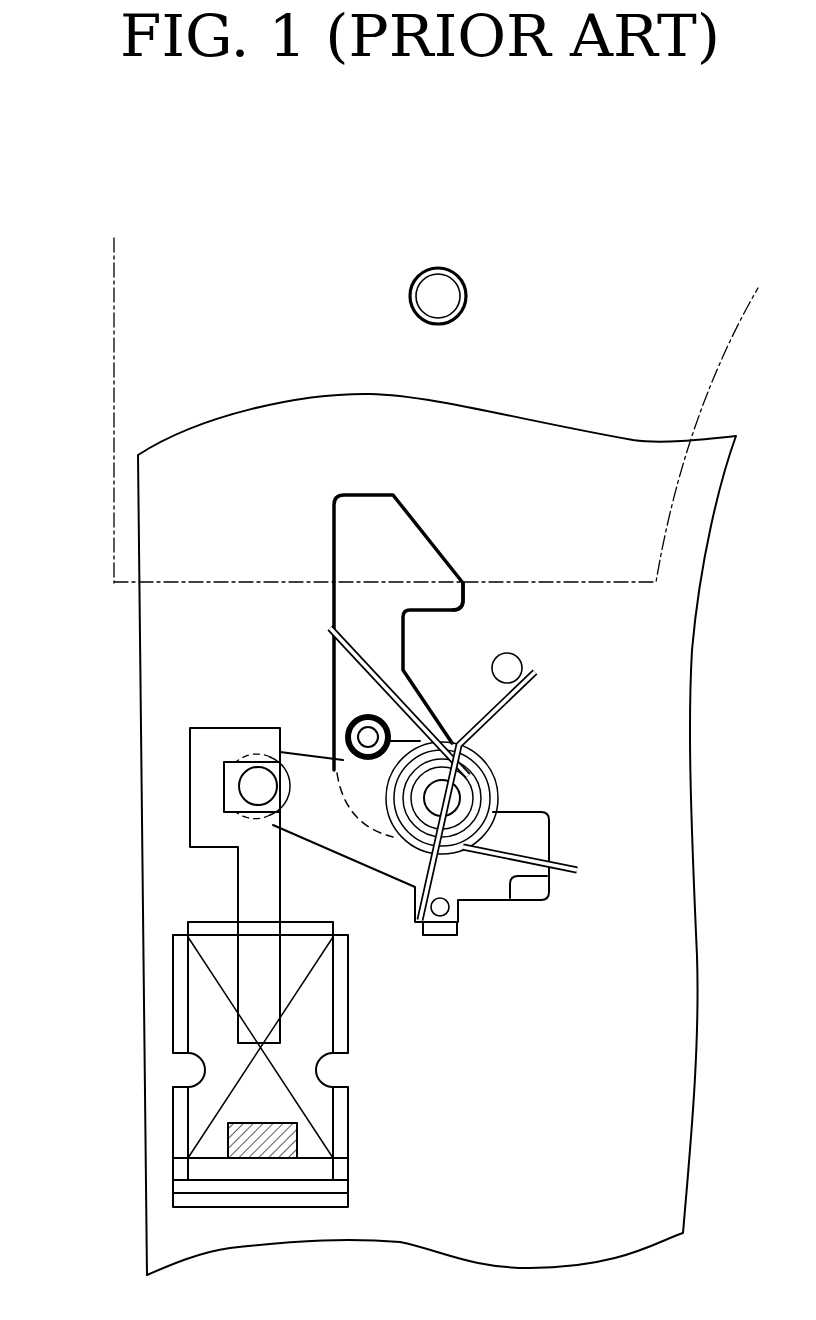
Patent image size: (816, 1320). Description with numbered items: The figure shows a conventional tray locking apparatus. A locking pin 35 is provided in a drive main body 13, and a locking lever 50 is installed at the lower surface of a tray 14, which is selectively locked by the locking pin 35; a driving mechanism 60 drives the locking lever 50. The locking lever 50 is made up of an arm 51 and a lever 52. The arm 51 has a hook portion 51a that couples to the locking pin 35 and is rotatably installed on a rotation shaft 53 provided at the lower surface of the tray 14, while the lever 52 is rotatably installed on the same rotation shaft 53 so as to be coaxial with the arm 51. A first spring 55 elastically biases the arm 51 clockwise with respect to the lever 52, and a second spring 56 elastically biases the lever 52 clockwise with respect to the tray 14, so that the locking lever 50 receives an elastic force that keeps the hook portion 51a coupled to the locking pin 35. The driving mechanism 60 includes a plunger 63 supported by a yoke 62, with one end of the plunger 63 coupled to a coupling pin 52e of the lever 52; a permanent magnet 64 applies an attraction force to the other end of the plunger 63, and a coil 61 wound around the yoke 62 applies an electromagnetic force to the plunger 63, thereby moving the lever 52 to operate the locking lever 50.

The drive main body 13 is at (127, 337).
The tray 14 is at (673, 952).
The locking pin 35 is at (450, 283).
The locking lever 50 is at (322, 506).
The arm 51 is at (393, 508).
The hook portion 51a is at (453, 593).
The lever 52 is at (330, 827).
The coupling pin 52e is at (253, 787).
The rotation shaft 53 is at (445, 797).
The first spring 55 is at (352, 658).
The second spring 56 is at (567, 870).
The driving mechanism 60 is at (370, 1045).
The coil 61 is at (200, 993).
The yoke 62 is at (352, 1128).
The plunger 63 is at (202, 742).
The permanent magnet 64 is at (268, 1150).